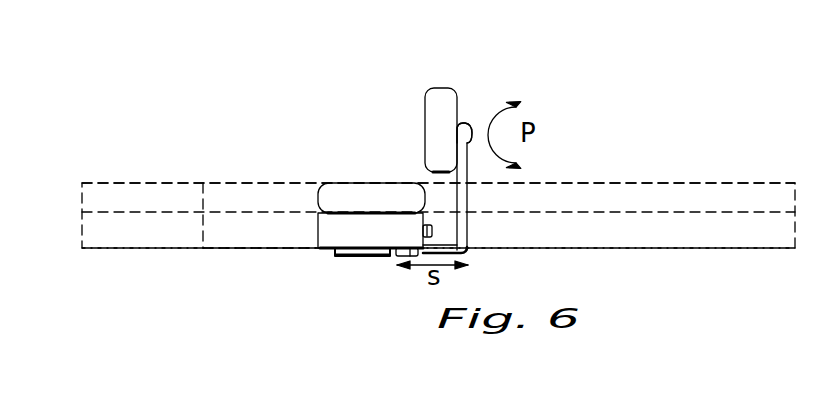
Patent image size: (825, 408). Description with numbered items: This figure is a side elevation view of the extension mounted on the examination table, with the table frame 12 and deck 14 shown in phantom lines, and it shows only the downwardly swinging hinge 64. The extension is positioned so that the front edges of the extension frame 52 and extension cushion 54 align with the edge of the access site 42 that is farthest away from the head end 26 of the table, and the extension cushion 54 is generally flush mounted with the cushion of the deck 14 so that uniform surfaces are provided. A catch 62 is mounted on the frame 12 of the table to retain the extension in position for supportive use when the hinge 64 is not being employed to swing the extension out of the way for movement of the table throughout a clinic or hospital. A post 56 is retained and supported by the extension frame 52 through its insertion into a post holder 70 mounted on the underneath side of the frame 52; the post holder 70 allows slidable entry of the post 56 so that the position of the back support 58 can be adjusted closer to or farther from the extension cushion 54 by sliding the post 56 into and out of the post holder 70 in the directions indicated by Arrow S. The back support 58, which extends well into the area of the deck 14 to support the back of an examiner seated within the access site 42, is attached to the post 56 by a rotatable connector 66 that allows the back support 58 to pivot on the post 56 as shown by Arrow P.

The frame 12 is at (651, 236).
The deck 14 is at (630, 192).
The head end 26 is at (70, 198).
The access site 42 is at (231, 256).
The extension frame 52 is at (320, 236).
The extension cushion 54 is at (340, 192).
The post 56 is at (464, 200).
The back support 58 is at (437, 93).
The catch 62 is at (433, 230).
The downwardly swinging hinge 64 is at (366, 257).
The rotatable connector 66 is at (461, 120).
The post holder 70 is at (405, 259).